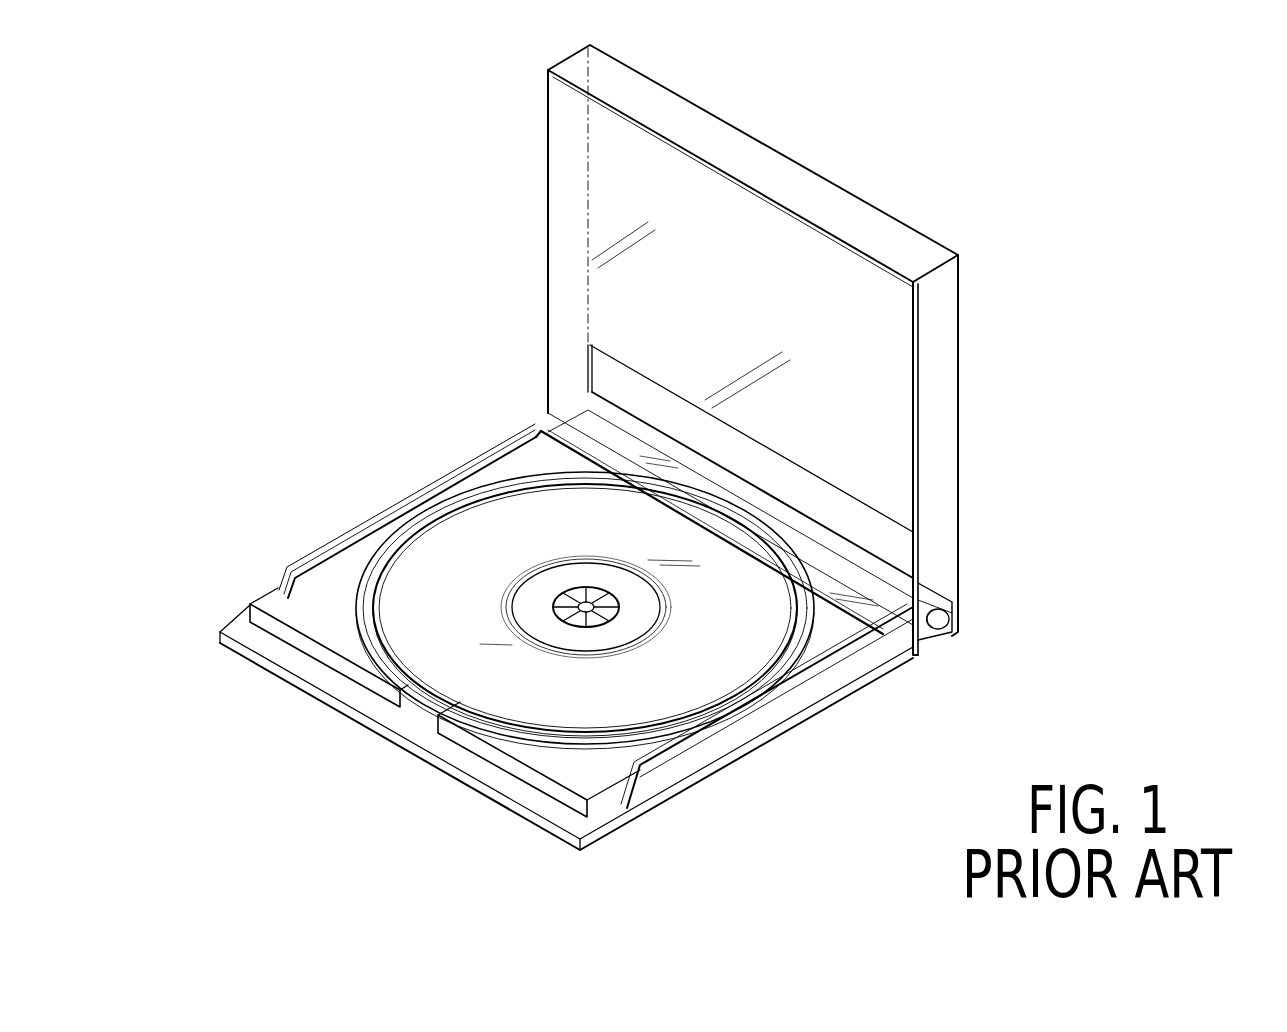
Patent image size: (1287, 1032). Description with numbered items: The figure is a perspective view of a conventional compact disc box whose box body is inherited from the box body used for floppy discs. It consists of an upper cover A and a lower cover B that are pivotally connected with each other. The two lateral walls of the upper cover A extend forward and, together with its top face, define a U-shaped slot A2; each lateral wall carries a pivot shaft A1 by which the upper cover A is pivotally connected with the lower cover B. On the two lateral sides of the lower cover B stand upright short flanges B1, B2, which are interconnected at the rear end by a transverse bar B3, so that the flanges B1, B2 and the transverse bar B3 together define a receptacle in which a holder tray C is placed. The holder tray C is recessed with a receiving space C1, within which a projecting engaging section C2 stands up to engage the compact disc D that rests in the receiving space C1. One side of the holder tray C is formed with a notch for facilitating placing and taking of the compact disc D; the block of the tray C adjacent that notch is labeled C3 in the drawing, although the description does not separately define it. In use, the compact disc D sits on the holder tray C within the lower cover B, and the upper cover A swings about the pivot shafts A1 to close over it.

The upper cover A is at (878, 222).
The pivot shaft A1 is at (937, 624).
The U-shaped slot A2 is at (872, 528).
The lower cover B is at (452, 753).
The upright short flange B1 is at (752, 730).
The upright short flange B2 is at (340, 547).
The transverse bar B3 is at (877, 610).
The holder tray C is at (295, 643).
The receiving space C1 is at (380, 557).
The projecting engaging section C2 is at (580, 585).
The front block of tray C3 is at (430, 705).
The compact disc D is at (540, 707).